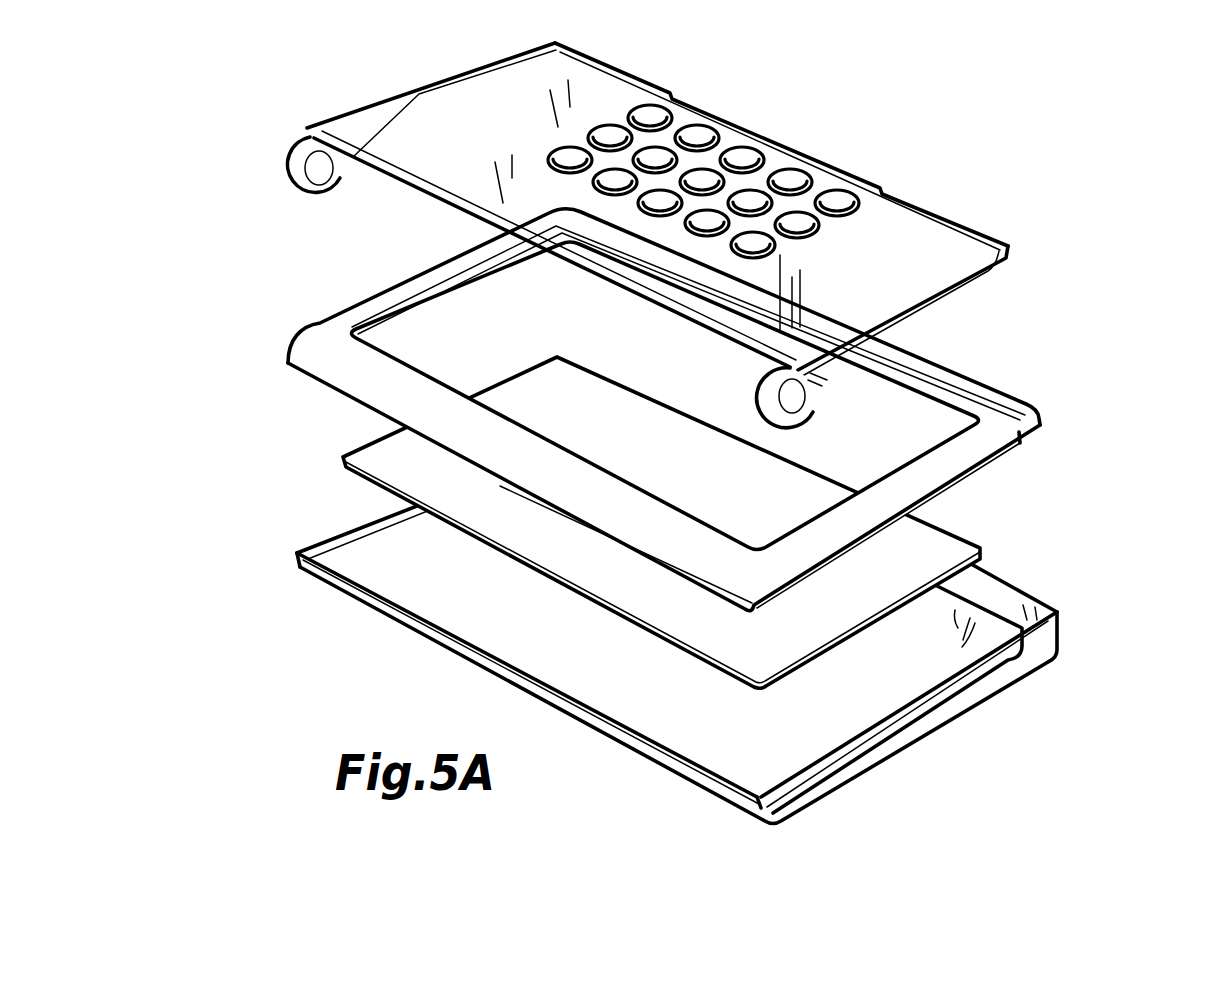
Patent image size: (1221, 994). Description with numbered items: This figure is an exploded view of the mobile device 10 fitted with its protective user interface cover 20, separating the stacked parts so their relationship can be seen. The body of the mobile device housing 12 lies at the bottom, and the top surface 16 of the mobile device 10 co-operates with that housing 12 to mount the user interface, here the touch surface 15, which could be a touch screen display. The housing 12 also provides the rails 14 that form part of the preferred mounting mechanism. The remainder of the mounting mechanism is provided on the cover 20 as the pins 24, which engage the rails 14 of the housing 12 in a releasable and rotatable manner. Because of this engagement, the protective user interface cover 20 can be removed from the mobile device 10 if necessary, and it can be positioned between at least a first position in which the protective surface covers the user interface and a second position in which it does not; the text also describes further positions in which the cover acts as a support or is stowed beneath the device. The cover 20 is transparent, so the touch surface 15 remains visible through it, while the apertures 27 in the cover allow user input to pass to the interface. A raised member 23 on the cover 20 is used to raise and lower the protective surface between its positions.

The mobile device 10 is at (1088, 250).
The mobile device housing 12 is at (1038, 598).
The rails 14 is at (683, 647).
The touch surface 15 is at (383, 452).
The top surface 16 is at (372, 324).
The protective user interface cover 20 is at (609, 229).
The raised member 23 is at (860, 167).
The pins 24 is at (323, 172).
The apertures 27 is at (757, 160).